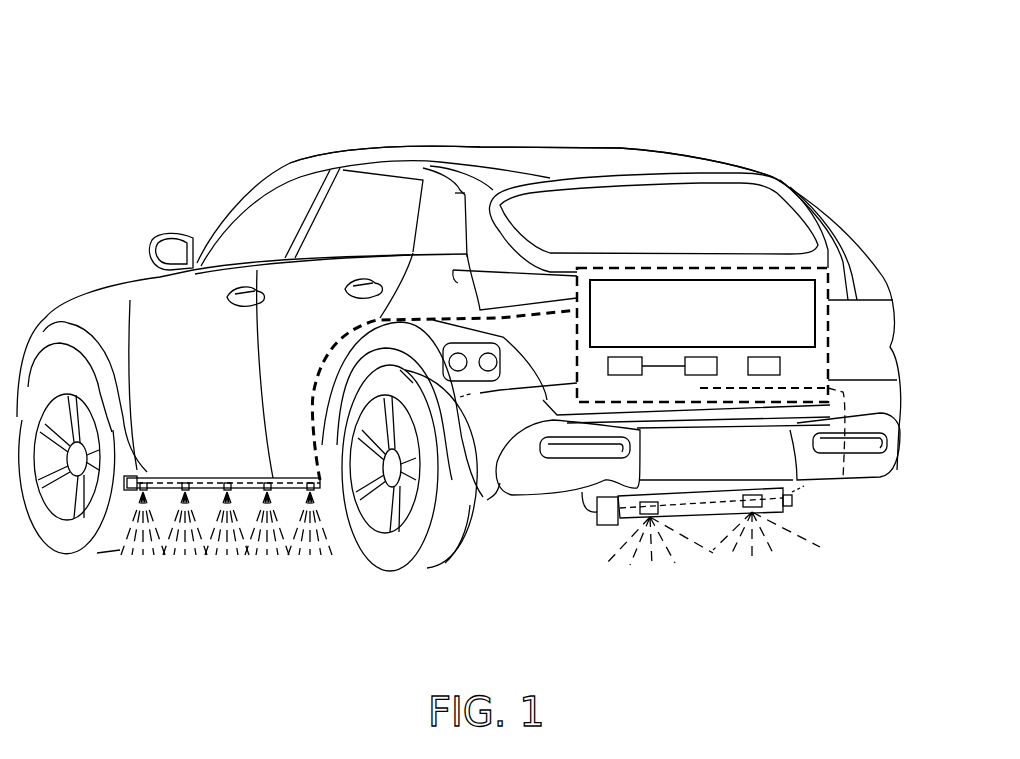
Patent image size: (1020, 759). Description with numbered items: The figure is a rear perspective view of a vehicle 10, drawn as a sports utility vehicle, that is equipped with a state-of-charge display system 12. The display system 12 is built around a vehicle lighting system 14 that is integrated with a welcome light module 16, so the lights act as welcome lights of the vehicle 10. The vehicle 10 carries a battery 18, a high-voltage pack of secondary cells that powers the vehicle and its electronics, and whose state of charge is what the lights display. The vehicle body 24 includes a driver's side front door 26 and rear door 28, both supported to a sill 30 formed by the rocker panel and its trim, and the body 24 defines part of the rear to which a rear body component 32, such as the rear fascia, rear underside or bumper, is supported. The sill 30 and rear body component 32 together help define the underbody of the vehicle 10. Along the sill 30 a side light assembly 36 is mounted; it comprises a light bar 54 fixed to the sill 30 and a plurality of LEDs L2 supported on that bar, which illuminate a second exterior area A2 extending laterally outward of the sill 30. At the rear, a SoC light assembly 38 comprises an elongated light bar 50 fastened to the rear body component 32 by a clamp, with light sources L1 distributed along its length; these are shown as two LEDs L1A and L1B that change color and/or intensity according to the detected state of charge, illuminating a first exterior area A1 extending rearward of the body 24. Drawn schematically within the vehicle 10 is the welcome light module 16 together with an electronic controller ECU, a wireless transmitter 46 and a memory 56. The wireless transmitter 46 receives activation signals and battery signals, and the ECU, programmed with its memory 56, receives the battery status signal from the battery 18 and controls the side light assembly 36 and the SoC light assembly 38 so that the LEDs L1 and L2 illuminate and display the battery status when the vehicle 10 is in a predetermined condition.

The vehicle 10 is at (301, 76).
The state-of-charge (SoC) display system 12 is at (907, 338).
The vehicle lighting system 14 is at (626, 243).
The welcome light module 16 is at (815, 305).
The battery 18 is at (608, 363).
The vehicle body 24 is at (456, 146).
The front door 26 is at (163, 322).
The rear door 28 is at (300, 297).
The sill 30 is at (234, 455).
The rear body component 32 is at (855, 472).
The side light assembly 36 is at (167, 467).
The SoC light assembly 38 is at (800, 560).
The wireless transmitter 46 is at (695, 378).
The light bar 50 is at (622, 528).
The light bar 54 is at (200, 476).
The memory 56 is at (780, 362).
The light sources L1 is at (752, 488).
The LED L1A is at (660, 556).
The LED L1B is at (766, 549).
The LEDs L2 is at (146, 492).
The first exterior area A1 is at (729, 594).
The second exterior area A2 is at (194, 603).
The electronic controller ECU is at (697, 266).